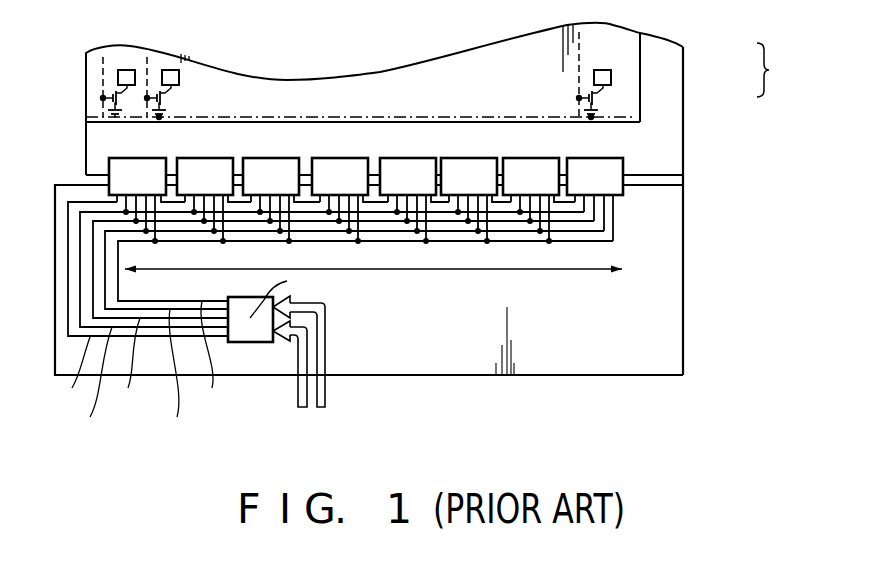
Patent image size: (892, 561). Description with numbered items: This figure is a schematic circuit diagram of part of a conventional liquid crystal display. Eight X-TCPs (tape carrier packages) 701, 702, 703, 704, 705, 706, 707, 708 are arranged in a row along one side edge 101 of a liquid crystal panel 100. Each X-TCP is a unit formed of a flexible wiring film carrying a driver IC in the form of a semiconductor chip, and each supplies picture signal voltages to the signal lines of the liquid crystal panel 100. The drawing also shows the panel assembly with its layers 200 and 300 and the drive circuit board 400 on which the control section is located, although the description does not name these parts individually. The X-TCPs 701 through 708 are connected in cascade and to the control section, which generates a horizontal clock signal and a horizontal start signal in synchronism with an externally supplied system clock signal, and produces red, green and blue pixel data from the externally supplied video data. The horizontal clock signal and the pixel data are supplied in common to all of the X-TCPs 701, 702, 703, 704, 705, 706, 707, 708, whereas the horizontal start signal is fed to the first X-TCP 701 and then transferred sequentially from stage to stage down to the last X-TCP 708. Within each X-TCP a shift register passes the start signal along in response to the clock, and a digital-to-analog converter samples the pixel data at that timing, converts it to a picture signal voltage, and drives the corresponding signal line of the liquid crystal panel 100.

The liquid crystal panel 100 is at (784, 70).
The side edge 101 is at (662, 175).
The lower substrate 200 is at (665, 92).
The upper substrate with pixel region 300 is at (620, 70).
The printed circuit board 400 is at (657, 255).
The X-TCP 701 is at (138, 178).
The X-TCP 702 is at (208, 178).
The X-TCP 703 is at (275, 178).
The X-TCP 704 is at (337, 178).
The X-TCP 705 is at (405, 178).
The X-TCP 706 is at (465, 178).
The X-TCP 707 is at (528, 178).
The X-TCP 708 is at (592, 178).